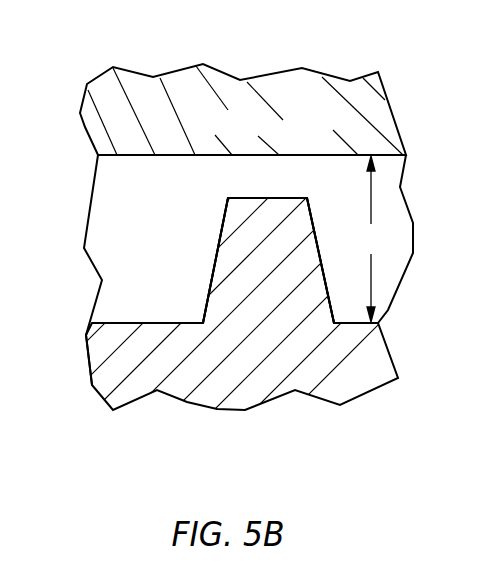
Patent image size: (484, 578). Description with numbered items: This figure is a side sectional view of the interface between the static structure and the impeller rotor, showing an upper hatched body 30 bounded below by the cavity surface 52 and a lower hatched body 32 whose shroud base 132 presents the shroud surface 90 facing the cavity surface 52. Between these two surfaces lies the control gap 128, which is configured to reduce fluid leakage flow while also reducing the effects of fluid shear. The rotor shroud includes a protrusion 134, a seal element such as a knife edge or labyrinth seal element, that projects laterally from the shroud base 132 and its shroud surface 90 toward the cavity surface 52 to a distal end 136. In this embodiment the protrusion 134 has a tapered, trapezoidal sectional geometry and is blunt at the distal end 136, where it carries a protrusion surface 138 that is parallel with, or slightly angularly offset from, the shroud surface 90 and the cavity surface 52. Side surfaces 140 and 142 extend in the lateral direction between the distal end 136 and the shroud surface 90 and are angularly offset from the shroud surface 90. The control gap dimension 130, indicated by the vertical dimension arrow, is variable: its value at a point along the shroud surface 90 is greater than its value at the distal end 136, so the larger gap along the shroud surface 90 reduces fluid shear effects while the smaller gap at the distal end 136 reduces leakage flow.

The first component 30 is at (342, 66).
The second component 32 is at (304, 406).
The cavity surface 52 is at (125, 157).
The shroud surface 90 is at (128, 322).
The control gap 128 is at (116, 232).
The control gap dimension 130 is at (368, 239).
The shroud base 132 is at (93, 370).
The protrusion 134 is at (220, 232).
The distal end 136 is at (290, 197).
The protrusion surface 138 is at (252, 197).
The side surface 140 is at (208, 297).
The side surface 142 is at (320, 260).